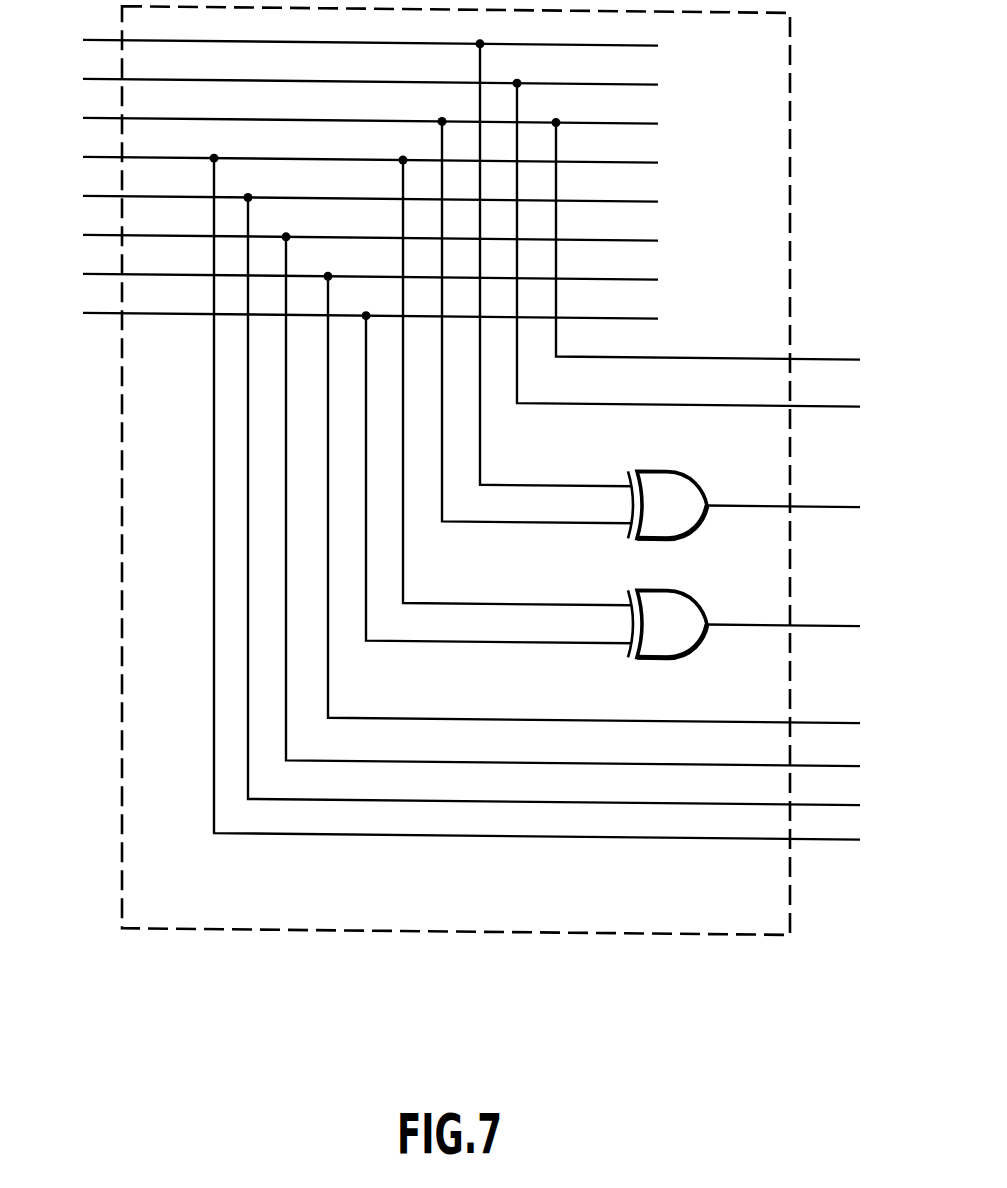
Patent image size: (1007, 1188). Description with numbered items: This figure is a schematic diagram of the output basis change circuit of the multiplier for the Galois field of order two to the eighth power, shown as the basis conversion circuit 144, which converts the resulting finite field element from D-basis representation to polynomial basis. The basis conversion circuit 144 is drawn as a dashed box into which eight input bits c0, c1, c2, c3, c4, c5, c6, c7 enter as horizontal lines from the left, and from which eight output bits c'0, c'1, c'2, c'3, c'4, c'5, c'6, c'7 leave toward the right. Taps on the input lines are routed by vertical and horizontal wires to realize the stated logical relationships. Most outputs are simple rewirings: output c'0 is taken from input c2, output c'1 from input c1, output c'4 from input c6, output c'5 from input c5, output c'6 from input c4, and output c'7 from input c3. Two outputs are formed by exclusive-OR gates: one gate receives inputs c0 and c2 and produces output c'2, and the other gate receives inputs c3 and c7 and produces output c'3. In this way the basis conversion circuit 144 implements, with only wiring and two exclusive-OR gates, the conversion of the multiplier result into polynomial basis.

The basis conversion circuit 144 is at (790, 879).
The input c0 is at (350, 39).
The input c1 is at (350, 78).
The input c2 is at (350, 117).
The input c3 is at (350, 156).
The input c4 is at (350, 195).
The input c5 is at (350, 234).
The input c6 is at (350, 273).
The input c7 is at (350, 312).
The output c'0 is at (726, 251).
The output c'1 is at (707, 255).
The output c'2 is at (669, 290).
The output c'3 is at (631, 407).
The output c'4 is at (612, 509).
The output c'5 is at (591, 511).
The output c'6 is at (572, 511).
The output c'7 is at (555, 509).